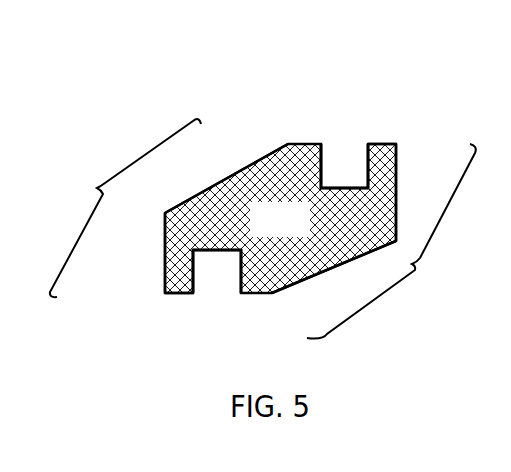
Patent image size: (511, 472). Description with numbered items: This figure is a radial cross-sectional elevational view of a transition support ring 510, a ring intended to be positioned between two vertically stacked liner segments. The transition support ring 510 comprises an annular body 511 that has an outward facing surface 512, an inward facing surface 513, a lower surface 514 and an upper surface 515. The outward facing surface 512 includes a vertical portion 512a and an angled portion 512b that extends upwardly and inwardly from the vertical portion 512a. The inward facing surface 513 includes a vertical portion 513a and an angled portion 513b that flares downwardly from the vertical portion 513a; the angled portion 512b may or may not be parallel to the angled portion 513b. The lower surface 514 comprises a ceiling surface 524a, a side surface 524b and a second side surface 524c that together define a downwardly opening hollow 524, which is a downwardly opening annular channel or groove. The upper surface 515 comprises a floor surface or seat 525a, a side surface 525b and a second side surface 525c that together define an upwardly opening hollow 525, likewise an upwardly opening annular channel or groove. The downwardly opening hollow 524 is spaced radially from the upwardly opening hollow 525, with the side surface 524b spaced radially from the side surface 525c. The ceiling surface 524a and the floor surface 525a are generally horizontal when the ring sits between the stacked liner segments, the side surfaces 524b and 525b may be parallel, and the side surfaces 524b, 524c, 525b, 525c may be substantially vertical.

The transition support ring 510 is at (260, 74).
The annular body 511 is at (280, 218).
The outward facing surface 512 is at (125, 208).
The vertical portion 512a is at (165, 244).
The angled portion 512b is at (207, 187).
The inward facing surface 513 is at (391, 241).
The vertical portion 513a is at (396, 179).
The angled portion 513b is at (348, 263).
The lower surface 514 is at (182, 295).
The upper surface 515 is at (375, 143).
The downwardly opening hollow 524 is at (217, 306).
The ceiling surface 524a is at (229, 251).
The side surface 524b is at (236, 287).
The second side surface 524c is at (195, 292).
The upwardly opening hollow 525 is at (350, 135).
The floor surface or seat 525a is at (351, 188).
The side surface 525b is at (332, 143).
The second side surface 525c is at (362, 144).